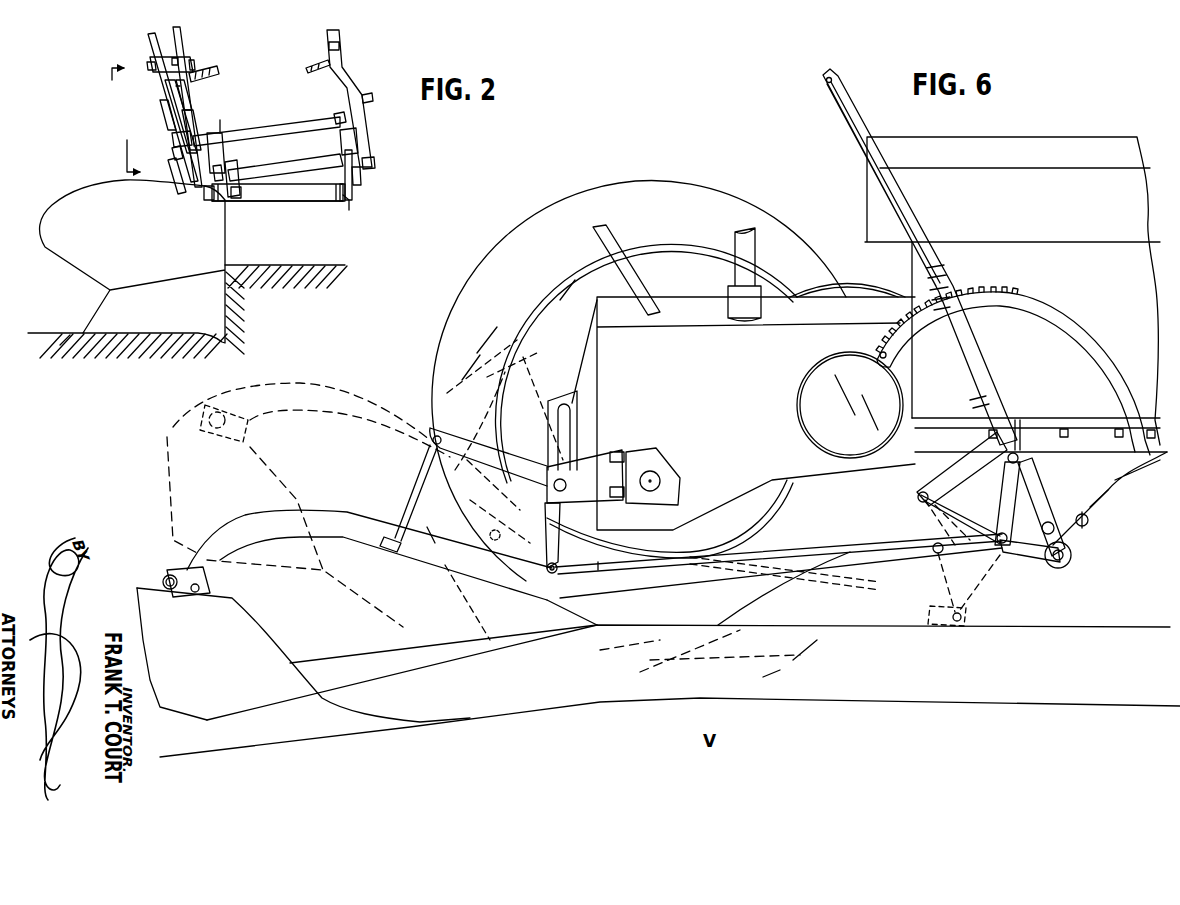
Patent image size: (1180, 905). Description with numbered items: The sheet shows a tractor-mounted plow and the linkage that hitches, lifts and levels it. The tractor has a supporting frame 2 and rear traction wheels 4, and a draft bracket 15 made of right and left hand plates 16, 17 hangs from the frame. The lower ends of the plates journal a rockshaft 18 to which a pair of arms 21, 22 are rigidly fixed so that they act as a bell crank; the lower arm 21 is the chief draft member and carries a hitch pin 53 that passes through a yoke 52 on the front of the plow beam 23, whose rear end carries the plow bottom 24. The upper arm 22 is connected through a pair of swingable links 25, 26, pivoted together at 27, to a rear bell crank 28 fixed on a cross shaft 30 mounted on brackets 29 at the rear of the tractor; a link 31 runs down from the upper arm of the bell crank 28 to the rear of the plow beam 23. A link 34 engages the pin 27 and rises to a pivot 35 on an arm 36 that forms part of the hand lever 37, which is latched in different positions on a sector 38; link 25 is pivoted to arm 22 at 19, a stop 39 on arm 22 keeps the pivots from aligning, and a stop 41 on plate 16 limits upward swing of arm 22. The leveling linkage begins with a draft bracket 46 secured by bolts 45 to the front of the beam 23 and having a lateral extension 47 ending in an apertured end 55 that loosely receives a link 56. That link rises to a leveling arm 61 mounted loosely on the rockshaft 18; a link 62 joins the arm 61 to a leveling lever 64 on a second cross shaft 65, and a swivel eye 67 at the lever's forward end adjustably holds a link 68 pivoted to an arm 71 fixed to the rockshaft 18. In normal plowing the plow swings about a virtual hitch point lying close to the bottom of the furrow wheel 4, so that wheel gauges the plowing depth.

In FIG. 2, the supporting frame 2 is at (308, 58).
In FIG. 6, the supporting frame 2 is at (1022, 427).
In FIG. 2, the rear traction wheels 4 is at (135, 119).
In FIG. 6, the rear traction wheels 4 is at (597, 188).
In FIG. 6, the draft bracket 15 is at (1112, 488).
In FIG. 2, the right hand plate 16 is at (222, 160).
In FIG. 6, the right hand plate 16 is at (1105, 472).
In FIG. 2, the left hand plate 17 is at (365, 100).
In FIG. 2, the rockshaft 18 is at (292, 168).
In FIG. 6, the rockshaft 18 is at (1060, 568).
In FIG. 2, the pivot 19 is at (130, 82).
In FIG. 6, the pivot 19 is at (1017, 455).
In FIG. 2, the arm 21 is at (230, 170).
In FIG. 6, the arm 21 is at (979, 553).
In FIG. 2, the arm 22 is at (190, 102).
In FIG. 6, the arm 22 is at (1040, 510).
In FIG. 2, the plow beam 23 is at (218, 142).
In FIG. 6, the plow beam 23 is at (357, 520).
In FIG. 2, the plow bottom 24 is at (207, 305).
In FIG. 2, the link 25 is at (168, 101).
In FIG. 6, the link 25 is at (1006, 482).
In FIG. 6, the link 26 is at (500, 538).
In FIG. 2, the pivot pin 27 is at (172, 178).
In FIG. 6, the pivot pin 27 is at (1008, 548).
In FIG. 6, the bell crank 28 is at (476, 420).
In FIG. 6, the brackets 29 is at (573, 412).
In FIG. 6, the cross shaft 30 is at (580, 455).
In FIG. 6, the link 31 is at (416, 490).
In FIG. 2, the link 34 is at (178, 134).
In FIG. 6, the link 34 is at (940, 507).
In FIG. 6, the pivot 35 is at (920, 494).
In FIG. 2, the arm 36 is at (165, 113).
In FIG. 6, the arm 36 is at (948, 474).
In FIG. 2, the hand lever 37 is at (150, 45).
In FIG. 6, the hand lever 37 is at (908, 218).
In FIG. 2, the sector 38 is at (182, 31).
In FIG. 6, the sector 38 is at (1055, 310).
In FIG. 2, the stop 39 is at (172, 151).
In FIG. 6, the stop 39 is at (1054, 532).
In FIG. 2, the stop 41 is at (196, 118).
In FIG. 2, the bolts 45 is at (206, 195).
In FIG. 2, the draft bracket 46 is at (270, 207).
In FIG. 2, the extension 47 is at (293, 198).
In FIG. 2, the yoke 52 is at (238, 201).
In FIG. 6, the hitch pin 53 is at (934, 556).
In FIG. 2, the apertured end 55 is at (340, 202).
In FIG. 2, the link 56 is at (349, 210).
In FIG. 2, the leveling arm 61 is at (352, 188).
In FIG. 2, the link 62 is at (358, 180).
In FIG. 2, the leveling lever 64 is at (355, 92).
In FIG. 2, the second cross shaft 65 is at (275, 130).
In FIG. 6, the second cross shaft 65 is at (1088, 521).
In FIG. 2, the swivel eye 67 is at (336, 118).
In FIG. 2, the link 68 is at (342, 140).
In FIG. 2, the arm 71 is at (366, 166).